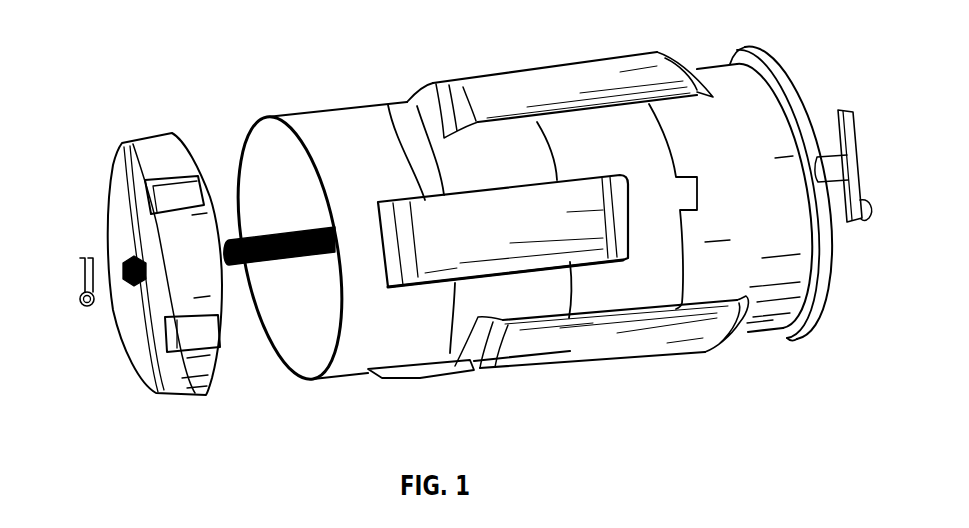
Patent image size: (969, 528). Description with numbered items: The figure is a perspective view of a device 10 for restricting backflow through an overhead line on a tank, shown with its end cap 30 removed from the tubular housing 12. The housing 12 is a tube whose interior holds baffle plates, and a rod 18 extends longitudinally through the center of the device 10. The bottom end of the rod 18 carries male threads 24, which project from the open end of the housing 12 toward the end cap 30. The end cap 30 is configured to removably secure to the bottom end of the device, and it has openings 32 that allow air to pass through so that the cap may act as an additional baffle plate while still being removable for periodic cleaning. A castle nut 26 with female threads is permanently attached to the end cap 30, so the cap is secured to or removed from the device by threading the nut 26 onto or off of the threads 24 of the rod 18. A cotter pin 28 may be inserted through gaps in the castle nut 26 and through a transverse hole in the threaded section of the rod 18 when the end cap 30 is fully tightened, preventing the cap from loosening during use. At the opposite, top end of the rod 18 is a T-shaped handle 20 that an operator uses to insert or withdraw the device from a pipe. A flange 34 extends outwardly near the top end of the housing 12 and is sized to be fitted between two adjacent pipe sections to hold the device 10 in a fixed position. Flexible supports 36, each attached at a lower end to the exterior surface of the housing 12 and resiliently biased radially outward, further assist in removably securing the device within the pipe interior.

The device 10 is at (141, 46).
The tubular housing 12 is at (317, 123).
The rod 18 is at (835, 157).
The handle 20 is at (866, 220).
The male threads 24 is at (305, 259).
The castle nut 26 is at (124, 270).
The cotter pin 28 is at (78, 278).
The end cap 30 is at (115, 192).
The openings 32 is at (166, 198).
The flange 34 is at (748, 50).
The flexible supports 36 is at (380, 106).